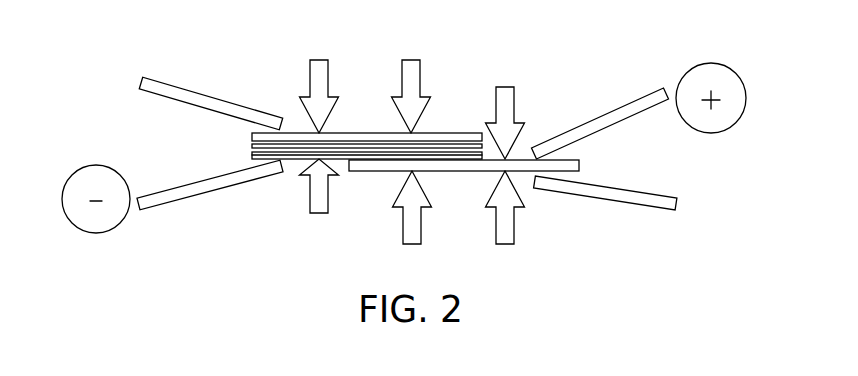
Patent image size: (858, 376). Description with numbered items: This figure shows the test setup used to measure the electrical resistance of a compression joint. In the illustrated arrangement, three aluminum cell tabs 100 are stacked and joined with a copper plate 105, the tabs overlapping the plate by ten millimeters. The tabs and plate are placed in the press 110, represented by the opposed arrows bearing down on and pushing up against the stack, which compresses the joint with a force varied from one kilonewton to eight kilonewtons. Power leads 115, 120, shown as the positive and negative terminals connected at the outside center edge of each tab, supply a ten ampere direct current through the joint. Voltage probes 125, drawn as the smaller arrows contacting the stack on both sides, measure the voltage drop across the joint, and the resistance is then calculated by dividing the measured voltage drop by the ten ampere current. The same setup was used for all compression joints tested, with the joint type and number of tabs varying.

The aluminum cell tabs 100 is at (252, 146).
The copper plate 105 is at (580, 164).
The press 110 is at (410, 60).
The power lead 115 is at (711, 63).
The power lead 120 is at (97, 165).
The voltage probes 125 is at (319, 60).